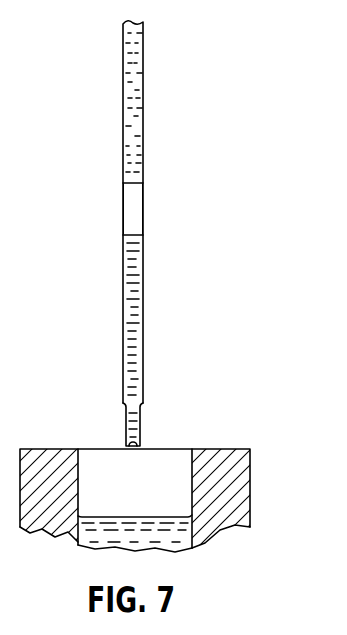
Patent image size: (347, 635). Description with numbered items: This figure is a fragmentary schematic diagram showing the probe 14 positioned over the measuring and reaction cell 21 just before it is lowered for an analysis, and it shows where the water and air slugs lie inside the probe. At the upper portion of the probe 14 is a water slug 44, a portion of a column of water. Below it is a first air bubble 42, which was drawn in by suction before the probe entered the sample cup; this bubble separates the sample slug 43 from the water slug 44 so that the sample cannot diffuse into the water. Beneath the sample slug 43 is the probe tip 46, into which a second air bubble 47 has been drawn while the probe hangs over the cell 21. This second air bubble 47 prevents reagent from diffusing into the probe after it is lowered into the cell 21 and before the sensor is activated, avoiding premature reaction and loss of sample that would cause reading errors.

The probe 14 is at (133, 212).
The water slug 44 is at (140, 146).
The first air bubble 42 is at (138, 215).
The sample slug 43 is at (137, 305).
The probe tip 46 is at (125, 418).
The second air bubble 47 is at (137, 440).
The measuring and reaction cell 21 is at (250, 506).